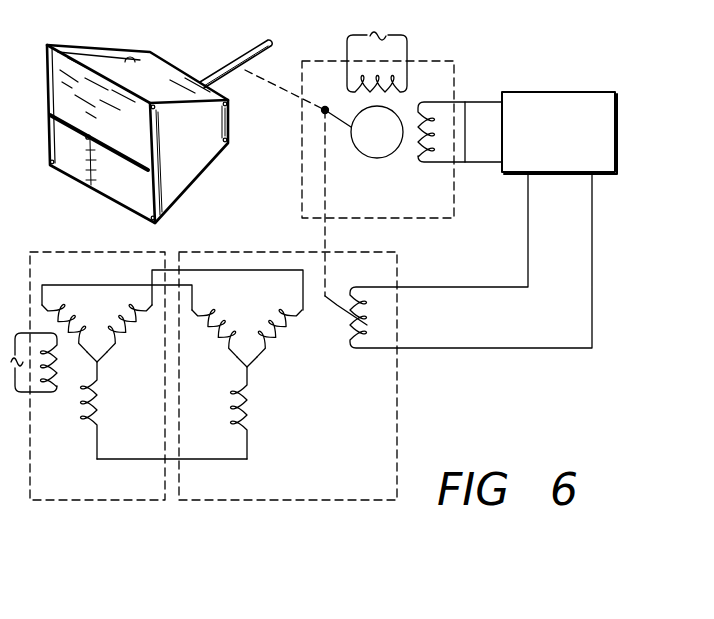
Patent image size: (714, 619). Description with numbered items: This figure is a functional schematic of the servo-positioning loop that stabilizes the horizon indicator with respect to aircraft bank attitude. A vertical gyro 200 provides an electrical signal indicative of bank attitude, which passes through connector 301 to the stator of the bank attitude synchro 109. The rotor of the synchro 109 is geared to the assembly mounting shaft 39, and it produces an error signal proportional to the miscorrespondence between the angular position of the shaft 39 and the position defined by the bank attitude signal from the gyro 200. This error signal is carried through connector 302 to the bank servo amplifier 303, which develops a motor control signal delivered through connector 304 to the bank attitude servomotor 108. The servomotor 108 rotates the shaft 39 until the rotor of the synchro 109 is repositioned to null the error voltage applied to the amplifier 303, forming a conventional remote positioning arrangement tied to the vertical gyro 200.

The assembly mounting shaft 39 is at (243, 53).
The bank attitude servomotor 108 is at (435, 58).
The bank attitude synchro control transformer 109 is at (397, 402).
The vertical gyro 200 is at (80, 500).
The connector 301 is at (173, 287).
The connector 302 is at (442, 348).
The bank servo amplifier 303 is at (538, 90).
The connector 304 is at (466, 110).